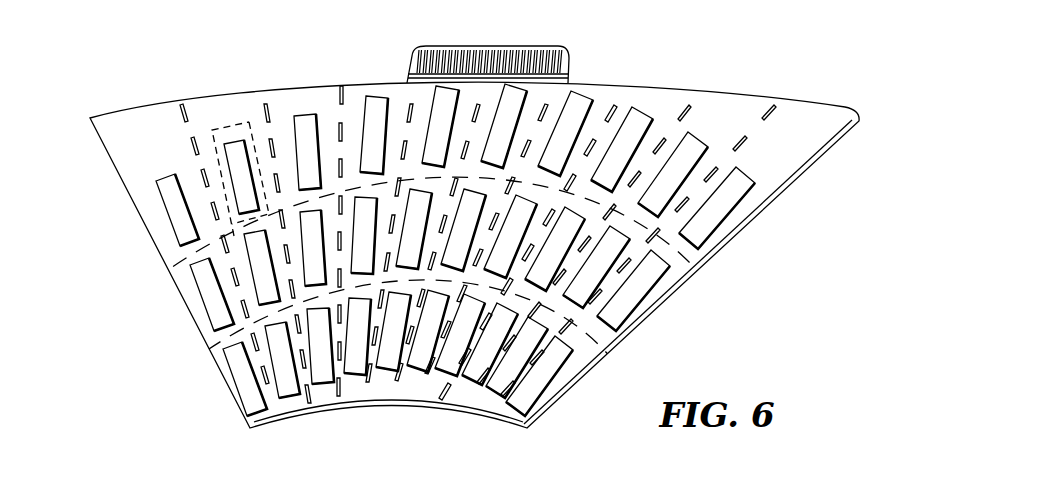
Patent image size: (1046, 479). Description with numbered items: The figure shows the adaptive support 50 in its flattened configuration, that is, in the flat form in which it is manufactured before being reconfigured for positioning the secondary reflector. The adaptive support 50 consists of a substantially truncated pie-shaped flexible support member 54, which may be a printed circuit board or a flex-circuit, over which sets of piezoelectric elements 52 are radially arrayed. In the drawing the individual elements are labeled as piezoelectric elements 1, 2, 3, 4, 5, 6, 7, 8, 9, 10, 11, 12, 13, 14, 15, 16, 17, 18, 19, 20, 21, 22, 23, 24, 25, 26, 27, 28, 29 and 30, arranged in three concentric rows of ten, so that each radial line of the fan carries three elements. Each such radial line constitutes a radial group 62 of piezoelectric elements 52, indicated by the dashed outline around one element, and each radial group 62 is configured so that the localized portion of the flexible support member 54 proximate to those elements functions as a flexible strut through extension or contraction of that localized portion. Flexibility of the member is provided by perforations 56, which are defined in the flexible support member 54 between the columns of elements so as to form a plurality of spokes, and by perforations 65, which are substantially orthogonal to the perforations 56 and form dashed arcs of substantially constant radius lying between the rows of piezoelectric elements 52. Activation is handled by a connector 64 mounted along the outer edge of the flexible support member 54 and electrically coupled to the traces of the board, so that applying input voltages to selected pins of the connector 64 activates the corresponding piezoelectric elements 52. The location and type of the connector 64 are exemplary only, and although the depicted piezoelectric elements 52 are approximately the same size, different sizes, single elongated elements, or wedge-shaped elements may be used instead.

The electrode cell 1 is at (245, 379).
The electrode cell 2 is at (212, 294).
The electrode cell 3 is at (177, 210).
The electrode cell 4 is at (282, 360).
The electrode cell 5 is at (262, 267).
The electrode cell 6 is at (241, 177).
The electrode cell 7 is at (320, 346).
The electrode cell 8 is at (313, 248).
The electrode cell 9 is at (307, 152).
The electrode cell 10 is at (357, 336).
The electrode cell 11 is at (364, 235).
The electrode cell 12 is at (374, 135).
The electrode cell 13 is at (393, 331).
The electrode cell 14 is at (414, 229).
The electrode cell 15 is at (440, 126).
The electrode cell 16 is at (428, 331).
The electrode cell 17 is at (463, 230).
The electrode cell 18 is at (504, 126).
The electrode cell 19 is at (460, 335).
The electrode cell 20 is at (510, 236).
The electrode cell 21 is at (565, 133).
The electrode cell 22 is at (490, 344).
The electrode cell 23 is at (555, 249).
The electrode cell 24 is at (622, 149).
The electrode cell 25 is at (517, 357).
The electrode cell 26 is at (596, 267).
The electrode cell 27 is at (673, 174).
The electrode cell 28 is at (539, 376).
The electrode cell 29 is at (633, 290).
The electrode cell 30 is at (717, 208).
The adaptive support 50 is at (506, 233).
The piezoelectric elements 52 is at (763, 240).
The flexible support member 54 is at (778, 168).
The perforations 56 is at (772, 108).
The radial group 62 is at (222, 136).
The connector 64 is at (570, 62).
The perforations 65 is at (665, 248).